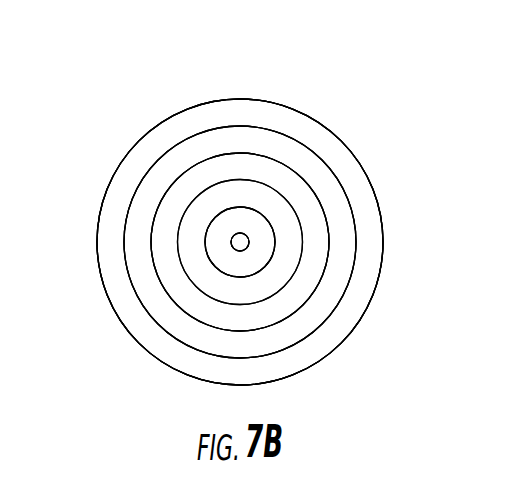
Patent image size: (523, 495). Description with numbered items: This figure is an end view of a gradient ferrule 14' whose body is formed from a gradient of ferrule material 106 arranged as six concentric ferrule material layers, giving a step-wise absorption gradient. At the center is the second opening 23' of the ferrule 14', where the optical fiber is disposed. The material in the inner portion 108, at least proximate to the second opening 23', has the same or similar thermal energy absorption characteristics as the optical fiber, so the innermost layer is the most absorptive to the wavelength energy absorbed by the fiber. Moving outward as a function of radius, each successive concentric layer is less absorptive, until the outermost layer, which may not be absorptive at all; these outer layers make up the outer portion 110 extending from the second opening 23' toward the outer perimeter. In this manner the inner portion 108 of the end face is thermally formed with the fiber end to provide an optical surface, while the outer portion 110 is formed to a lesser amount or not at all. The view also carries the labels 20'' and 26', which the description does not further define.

The gradient ferrule 14' is at (240, 216).
The coating layers arrangement 20'' is at (510, 332).
The second opening 23' is at (325, 255).
The cladding 26' is at (240, 270).
The gradient of ferrule material 106 is at (192, 99).
The inner portion 108 is at (217, 262).
The outer portion 110 is at (145, 357).